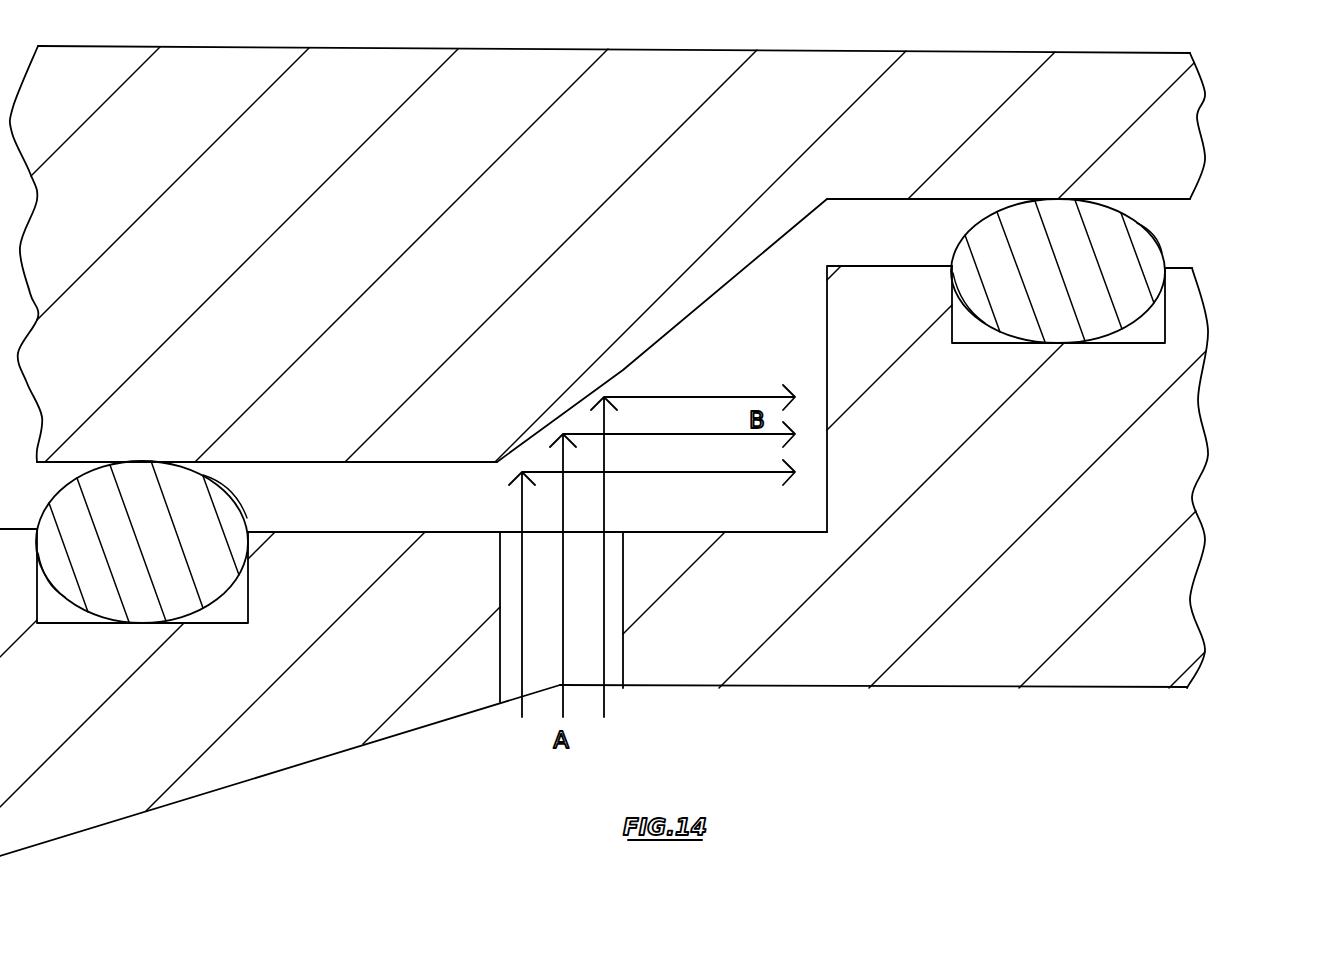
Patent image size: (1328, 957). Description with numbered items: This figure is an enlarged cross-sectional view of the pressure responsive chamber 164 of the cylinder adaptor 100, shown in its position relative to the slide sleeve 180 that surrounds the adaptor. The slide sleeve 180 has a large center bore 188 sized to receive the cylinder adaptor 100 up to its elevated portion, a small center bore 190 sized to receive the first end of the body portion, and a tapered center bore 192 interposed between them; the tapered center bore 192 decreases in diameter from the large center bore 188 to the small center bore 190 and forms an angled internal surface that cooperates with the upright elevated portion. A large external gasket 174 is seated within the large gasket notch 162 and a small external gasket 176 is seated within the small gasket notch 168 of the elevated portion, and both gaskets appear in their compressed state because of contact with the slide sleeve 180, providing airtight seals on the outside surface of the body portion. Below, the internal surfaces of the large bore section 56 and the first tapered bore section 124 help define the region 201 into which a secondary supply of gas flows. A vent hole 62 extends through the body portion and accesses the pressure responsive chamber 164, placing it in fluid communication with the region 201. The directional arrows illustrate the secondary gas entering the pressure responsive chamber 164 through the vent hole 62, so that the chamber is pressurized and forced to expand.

The slide sleeve 180 is at (1207, 132).
The large center bore 188 is at (860, 199).
The tapered center bore 192 is at (684, 317).
The small center bore 190 is at (401, 462).
The small external gasket 176 is at (1165, 254).
The small gasket notch 168 is at (952, 344).
The cylinder adaptor 100 is at (1205, 554).
The large bore section 56 is at (785, 688).
The first tapered bore section 124 is at (384, 740).
The region 201 is at (255, 847).
The vent hole 62 is at (511, 678).
The large external gasket 174 is at (255, 512).
The large gasket notch 162 is at (213, 625).
The pressure responsive chamber 164 is at (707, 513).